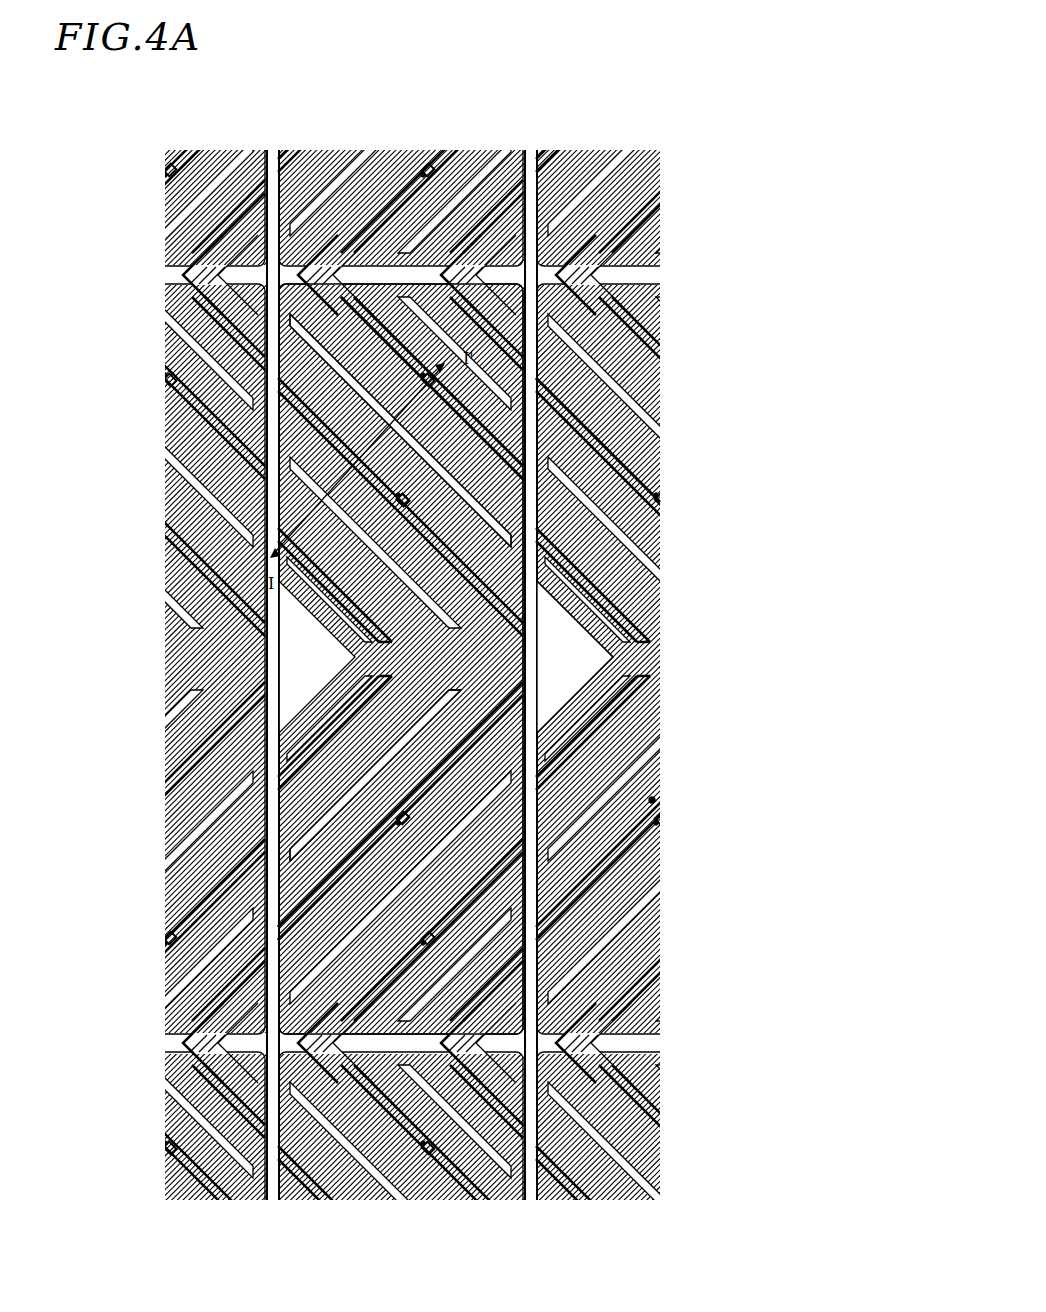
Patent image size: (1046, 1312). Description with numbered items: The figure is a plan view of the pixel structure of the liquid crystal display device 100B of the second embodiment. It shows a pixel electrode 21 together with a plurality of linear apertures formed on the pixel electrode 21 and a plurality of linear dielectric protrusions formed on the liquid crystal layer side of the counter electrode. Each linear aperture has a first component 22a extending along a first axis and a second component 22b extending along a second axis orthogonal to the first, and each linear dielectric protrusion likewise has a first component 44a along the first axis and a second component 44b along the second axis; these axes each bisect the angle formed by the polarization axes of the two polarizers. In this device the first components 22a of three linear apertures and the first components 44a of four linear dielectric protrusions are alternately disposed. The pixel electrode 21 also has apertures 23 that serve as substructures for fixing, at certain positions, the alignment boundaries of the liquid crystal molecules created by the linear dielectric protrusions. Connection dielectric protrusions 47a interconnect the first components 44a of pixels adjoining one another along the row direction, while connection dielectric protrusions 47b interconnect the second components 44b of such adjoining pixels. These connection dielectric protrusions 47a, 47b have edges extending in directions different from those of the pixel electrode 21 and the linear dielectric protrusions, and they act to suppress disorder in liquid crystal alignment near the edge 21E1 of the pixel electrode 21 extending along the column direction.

The liquid crystal display device 100B is at (638, 108).
The pixel electrode 21 is at (385, 292).
The edge of the pixel electrode 21E1 is at (535, 655).
The first component 22a is at (365, 394).
The second component 22b is at (360, 782).
The aperture 23 is at (583, 437).
The first component 44a is at (375, 339).
The second component 44b is at (345, 868).
The connection dielectric protrusion 47a is at (408, 499).
The connection dielectric protrusion 47b is at (655, 800).